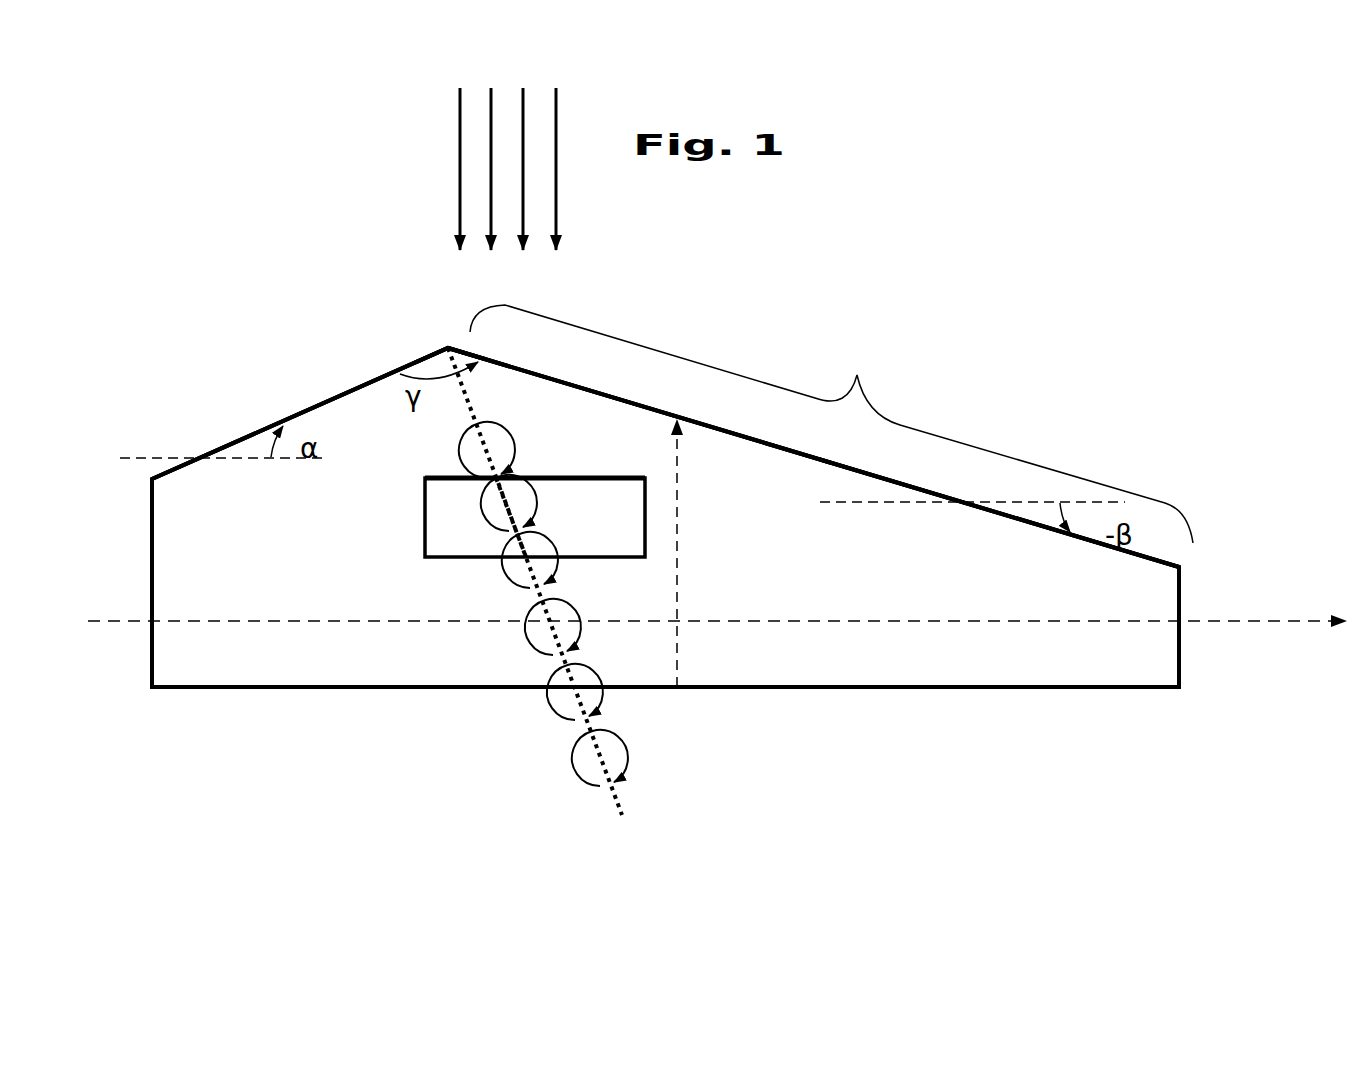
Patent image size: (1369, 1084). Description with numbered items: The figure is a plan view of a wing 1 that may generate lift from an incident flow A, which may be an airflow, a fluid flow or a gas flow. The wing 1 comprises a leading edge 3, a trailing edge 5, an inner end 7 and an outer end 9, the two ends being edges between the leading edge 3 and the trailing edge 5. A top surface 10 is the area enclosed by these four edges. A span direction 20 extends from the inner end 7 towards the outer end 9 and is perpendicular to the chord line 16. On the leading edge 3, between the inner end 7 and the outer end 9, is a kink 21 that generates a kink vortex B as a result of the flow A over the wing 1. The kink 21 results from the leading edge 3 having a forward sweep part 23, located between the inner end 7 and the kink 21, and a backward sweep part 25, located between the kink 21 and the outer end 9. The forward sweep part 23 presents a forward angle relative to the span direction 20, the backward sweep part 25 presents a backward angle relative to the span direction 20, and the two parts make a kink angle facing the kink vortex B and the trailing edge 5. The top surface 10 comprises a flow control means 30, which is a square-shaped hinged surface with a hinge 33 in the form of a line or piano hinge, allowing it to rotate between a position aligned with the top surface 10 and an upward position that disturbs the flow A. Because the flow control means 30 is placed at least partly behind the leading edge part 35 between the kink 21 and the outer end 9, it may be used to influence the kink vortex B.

The wing 1 is at (945, 734).
The leading edge 3 is at (733, 432).
The trailing edge 5 is at (755, 688).
The inner end 7 is at (152, 570).
The outer end 9 is at (1182, 655).
The top surface 10 is at (1048, 643).
The chord line 16 is at (680, 545).
The span direction 20 is at (750, 618).
The kink 21 is at (448, 348).
The forward sweep part 23 is at (325, 401).
The backward sweep part 25 is at (822, 457).
The flow control means 30 is at (458, 533).
The hinge 33 is at (433, 478).
The leading edge part 35 is at (831, 424).
The incident flow A is at (448, 163).
The kink vortex B is at (483, 447).